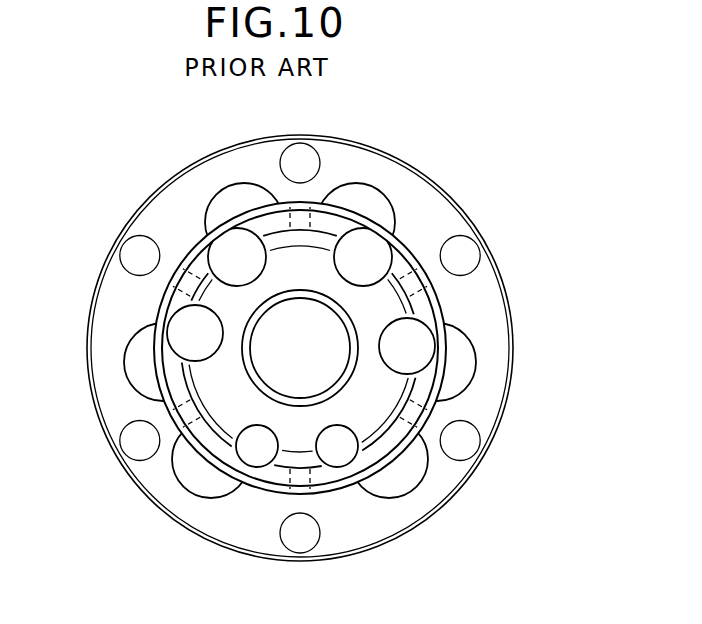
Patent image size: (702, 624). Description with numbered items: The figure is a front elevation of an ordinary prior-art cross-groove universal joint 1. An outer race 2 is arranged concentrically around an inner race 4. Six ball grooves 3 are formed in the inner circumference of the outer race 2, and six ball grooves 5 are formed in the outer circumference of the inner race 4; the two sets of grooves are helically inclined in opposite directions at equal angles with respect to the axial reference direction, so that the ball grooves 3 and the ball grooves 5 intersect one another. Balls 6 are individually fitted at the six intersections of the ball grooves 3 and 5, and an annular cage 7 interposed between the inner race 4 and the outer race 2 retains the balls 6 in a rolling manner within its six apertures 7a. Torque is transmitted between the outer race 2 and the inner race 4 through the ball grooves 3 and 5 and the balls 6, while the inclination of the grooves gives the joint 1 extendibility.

The cross-groove universal joint 1 is at (394, 150).
The outer race 2 is at (390, 506).
The ball grooves 3 is at (340, 195).
The inner race 4 is at (225, 382).
The ball grooves 5 is at (198, 302).
The balls 6 is at (224, 206).
The cage 7 is at (276, 222).
The apertures 7a is at (417, 292).